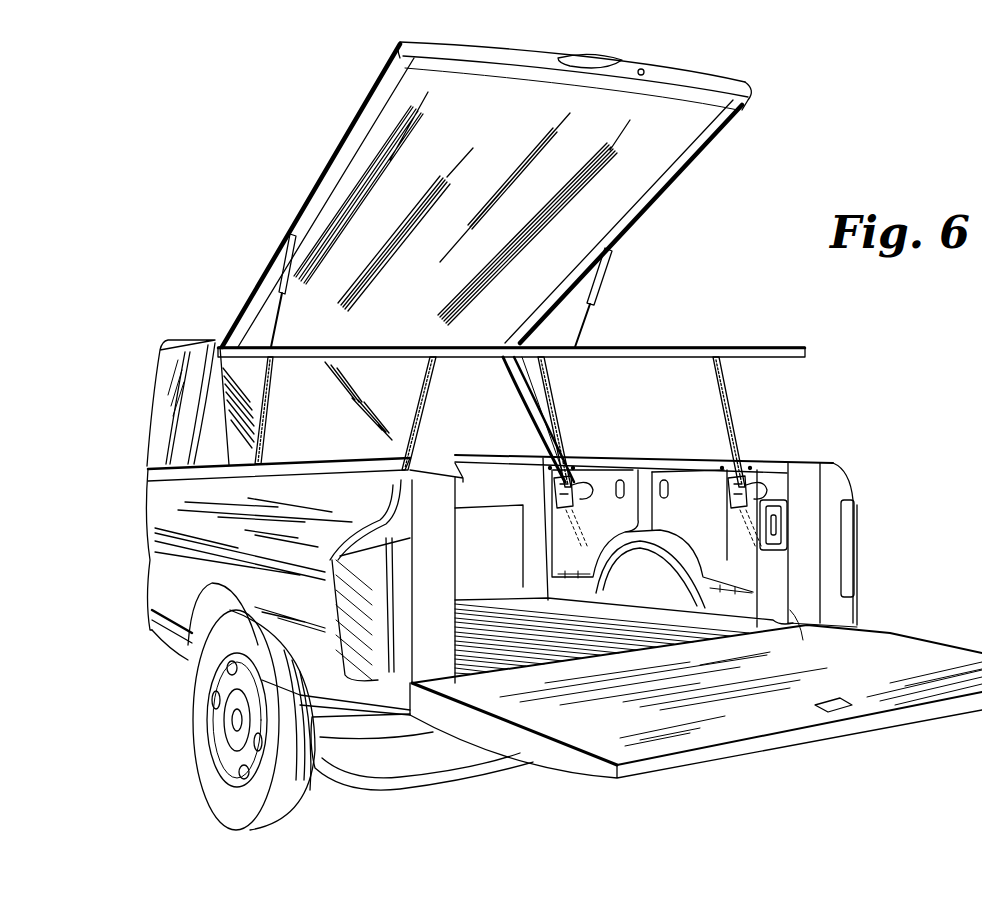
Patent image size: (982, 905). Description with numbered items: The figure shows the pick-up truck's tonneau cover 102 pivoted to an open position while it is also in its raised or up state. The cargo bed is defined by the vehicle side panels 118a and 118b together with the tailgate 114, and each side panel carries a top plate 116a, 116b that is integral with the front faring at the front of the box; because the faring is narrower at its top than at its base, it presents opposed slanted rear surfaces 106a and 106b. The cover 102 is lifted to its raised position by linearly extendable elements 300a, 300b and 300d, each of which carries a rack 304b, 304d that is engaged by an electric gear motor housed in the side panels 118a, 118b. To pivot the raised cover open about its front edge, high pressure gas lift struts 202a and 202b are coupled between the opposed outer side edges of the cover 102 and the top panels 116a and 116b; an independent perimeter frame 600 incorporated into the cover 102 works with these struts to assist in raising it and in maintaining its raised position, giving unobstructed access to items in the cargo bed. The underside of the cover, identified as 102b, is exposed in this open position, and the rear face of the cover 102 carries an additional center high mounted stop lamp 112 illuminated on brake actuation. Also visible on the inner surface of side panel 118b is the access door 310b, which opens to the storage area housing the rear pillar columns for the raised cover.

The tonneau cover 102 is at (390, 100).
The cover inner panel 102b is at (635, 150).
The center high mounted stop lamp 112 is at (610, 60).
The gas powered strut 202a is at (600, 266).
The gas powered strut 202b is at (286, 258).
The perimeter frame 600 is at (738, 346).
The linearly extendable element 300a is at (428, 410).
The linearly extendable element 300b is at (270, 394).
The linearly extendable element 300d is at (558, 378).
The rack 304b is at (736, 412).
The rack 304d is at (562, 412).
The slanted rear surface 106a is at (546, 432).
The slanted rear surface 106b is at (204, 433).
The top plate 116a is at (795, 460).
The top plate 116b is at (425, 462).
The vehicle side panel 118a is at (866, 542).
The vehicle side panel 118b is at (158, 550).
The access door 310b is at (775, 588).
The tailgate 114 is at (713, 696).